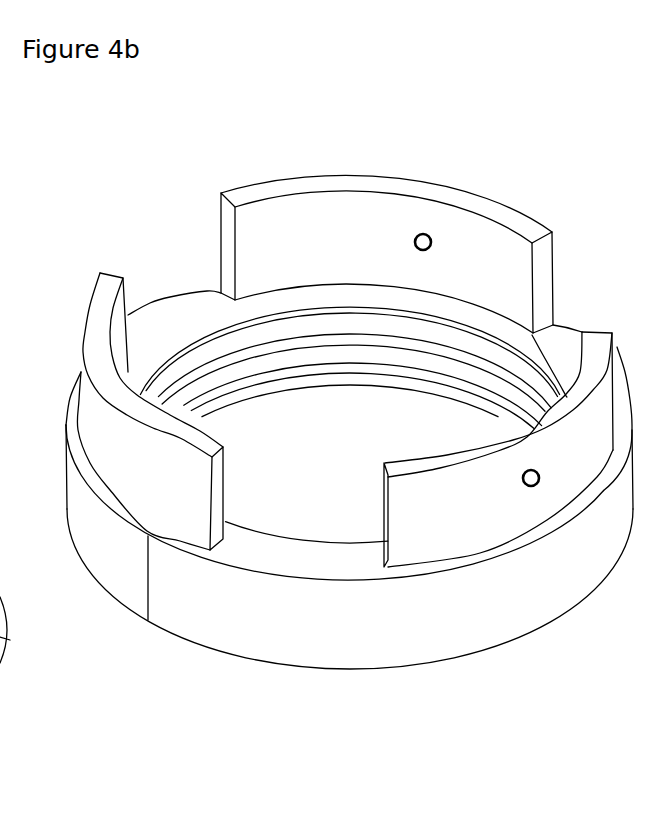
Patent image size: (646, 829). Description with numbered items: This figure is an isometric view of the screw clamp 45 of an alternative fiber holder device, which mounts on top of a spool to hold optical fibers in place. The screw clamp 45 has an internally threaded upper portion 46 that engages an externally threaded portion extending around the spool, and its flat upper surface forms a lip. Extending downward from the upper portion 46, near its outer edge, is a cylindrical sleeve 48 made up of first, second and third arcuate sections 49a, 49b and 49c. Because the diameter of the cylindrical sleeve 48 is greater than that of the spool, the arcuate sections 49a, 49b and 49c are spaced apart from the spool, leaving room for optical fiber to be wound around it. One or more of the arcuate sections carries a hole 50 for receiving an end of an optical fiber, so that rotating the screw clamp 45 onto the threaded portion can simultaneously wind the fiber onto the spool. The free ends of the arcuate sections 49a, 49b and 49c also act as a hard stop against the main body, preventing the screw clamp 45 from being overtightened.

The screw clamp 45 is at (308, 640).
The internally threaded upper portion 46 is at (287, 370).
The cylindrical sleeve 48 is at (345, 318).
The first arcuate section 49a is at (377, 240).
The second arcuate section 49b is at (463, 524).
The third arcuate section 49c is at (182, 490).
The hole 50 is at (433, 233).